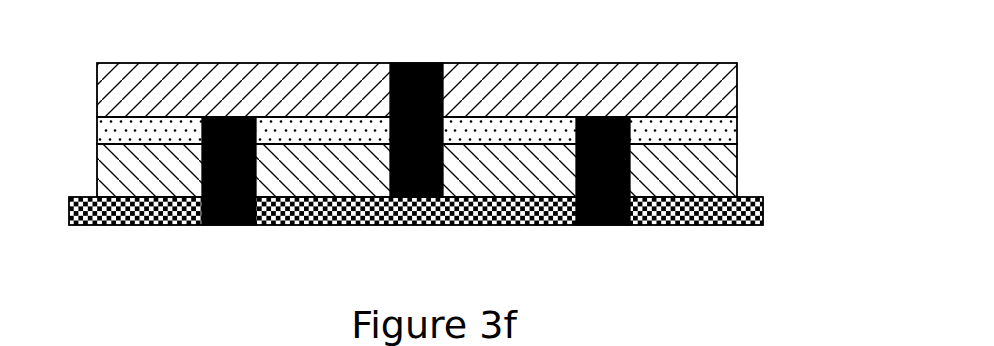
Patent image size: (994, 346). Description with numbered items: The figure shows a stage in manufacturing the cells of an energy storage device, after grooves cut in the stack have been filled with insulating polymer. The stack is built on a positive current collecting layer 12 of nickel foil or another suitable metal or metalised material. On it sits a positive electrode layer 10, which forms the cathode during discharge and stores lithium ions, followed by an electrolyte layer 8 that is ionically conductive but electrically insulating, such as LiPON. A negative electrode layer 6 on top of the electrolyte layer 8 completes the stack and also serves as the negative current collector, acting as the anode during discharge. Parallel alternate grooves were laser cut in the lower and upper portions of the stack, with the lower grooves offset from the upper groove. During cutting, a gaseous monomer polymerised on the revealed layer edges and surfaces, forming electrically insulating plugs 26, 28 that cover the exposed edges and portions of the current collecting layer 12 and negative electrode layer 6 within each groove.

The negative electrode layer 6 is at (725, 85).
The electrolyte layer 8 is at (727, 128).
The positive electrode layer 10 is at (738, 175).
The positive current collecting layer 12 is at (762, 212).
The electrically insulating plug 26 is at (223, 225).
The electrically insulating plug 28 is at (422, 62).